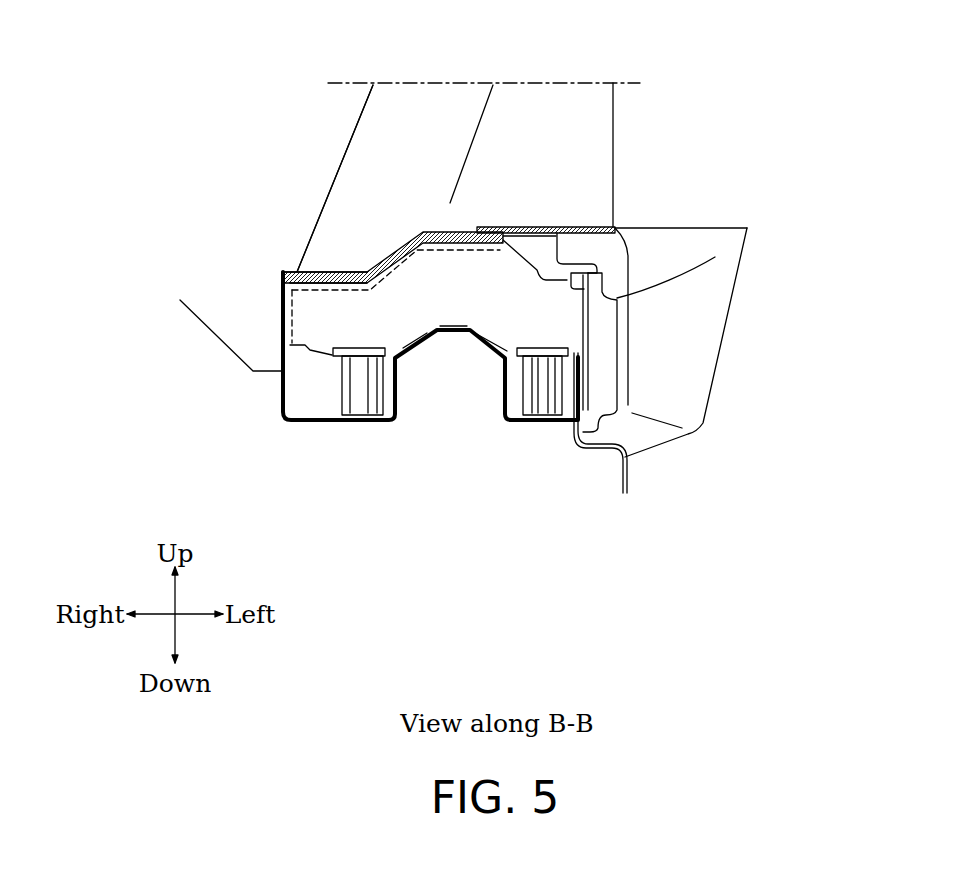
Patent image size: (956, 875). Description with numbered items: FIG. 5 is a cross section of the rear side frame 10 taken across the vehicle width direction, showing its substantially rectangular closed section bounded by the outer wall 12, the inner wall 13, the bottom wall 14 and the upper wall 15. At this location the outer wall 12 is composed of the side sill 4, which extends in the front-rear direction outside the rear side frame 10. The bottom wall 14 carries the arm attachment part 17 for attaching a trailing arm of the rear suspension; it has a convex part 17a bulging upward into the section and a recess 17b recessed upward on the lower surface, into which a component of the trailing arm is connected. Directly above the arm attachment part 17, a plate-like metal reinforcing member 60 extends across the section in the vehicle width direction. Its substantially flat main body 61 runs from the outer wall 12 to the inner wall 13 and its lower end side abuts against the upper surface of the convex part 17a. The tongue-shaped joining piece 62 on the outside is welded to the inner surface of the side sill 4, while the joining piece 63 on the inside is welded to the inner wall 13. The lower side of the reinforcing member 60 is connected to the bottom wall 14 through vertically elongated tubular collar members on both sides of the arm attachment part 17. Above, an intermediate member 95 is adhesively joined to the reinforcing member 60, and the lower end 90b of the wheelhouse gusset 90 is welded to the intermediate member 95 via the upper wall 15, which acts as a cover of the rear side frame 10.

The side sill 4 is at (598, 352).
The rear side frame 10 is at (499, 208).
The outer wall 12 is at (578, 377).
The inner wall 13 is at (281, 328).
The bottom wall 14 is at (314, 423).
The upper wall 15 is at (330, 268).
The arm attachment part 17 is at (441, 410).
The convex part 17a is at (490, 348).
The recess 17b is at (503, 400).
The reinforcing member 60 is at (438, 275).
The main body 61 is at (510, 285).
The joining piece 62 is at (578, 304).
The joining piece 63 is at (281, 303).
The wheelhouse gusset 90 is at (597, 113).
The lower end 90b is at (434, 228).
The intermediate member 95 is at (331, 278).